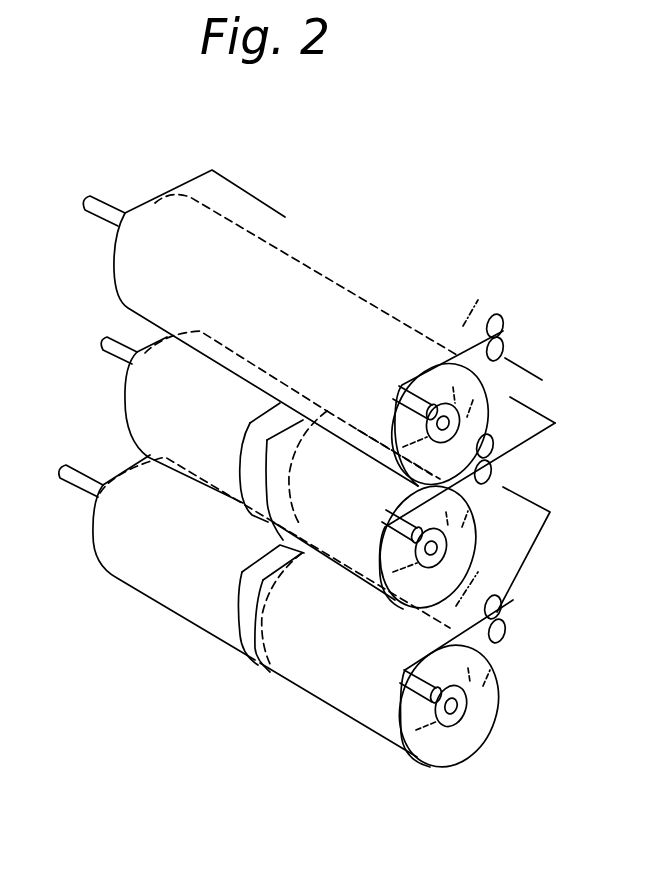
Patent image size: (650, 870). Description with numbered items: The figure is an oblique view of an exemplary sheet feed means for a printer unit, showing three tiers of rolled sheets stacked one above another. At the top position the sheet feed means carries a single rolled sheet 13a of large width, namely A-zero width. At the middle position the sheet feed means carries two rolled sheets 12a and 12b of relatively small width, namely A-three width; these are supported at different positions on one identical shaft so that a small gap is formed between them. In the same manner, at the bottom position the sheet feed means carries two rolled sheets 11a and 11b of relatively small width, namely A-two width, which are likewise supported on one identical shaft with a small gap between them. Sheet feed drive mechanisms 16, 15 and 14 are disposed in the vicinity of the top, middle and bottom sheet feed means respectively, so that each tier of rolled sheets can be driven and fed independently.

The rolled sheet 11a is at (157, 592).
The rolled sheet 11b is at (317, 695).
The rolled sheet 12a is at (150, 418).
The rolled sheet 12b is at (338, 558).
The rolled sheet 13a is at (135, 289).
The sheet feed drive mechanism 14 is at (505, 633).
The sheet feed drive mechanism 15 is at (491, 473).
The sheet feed drive mechanism 16 is at (502, 325).